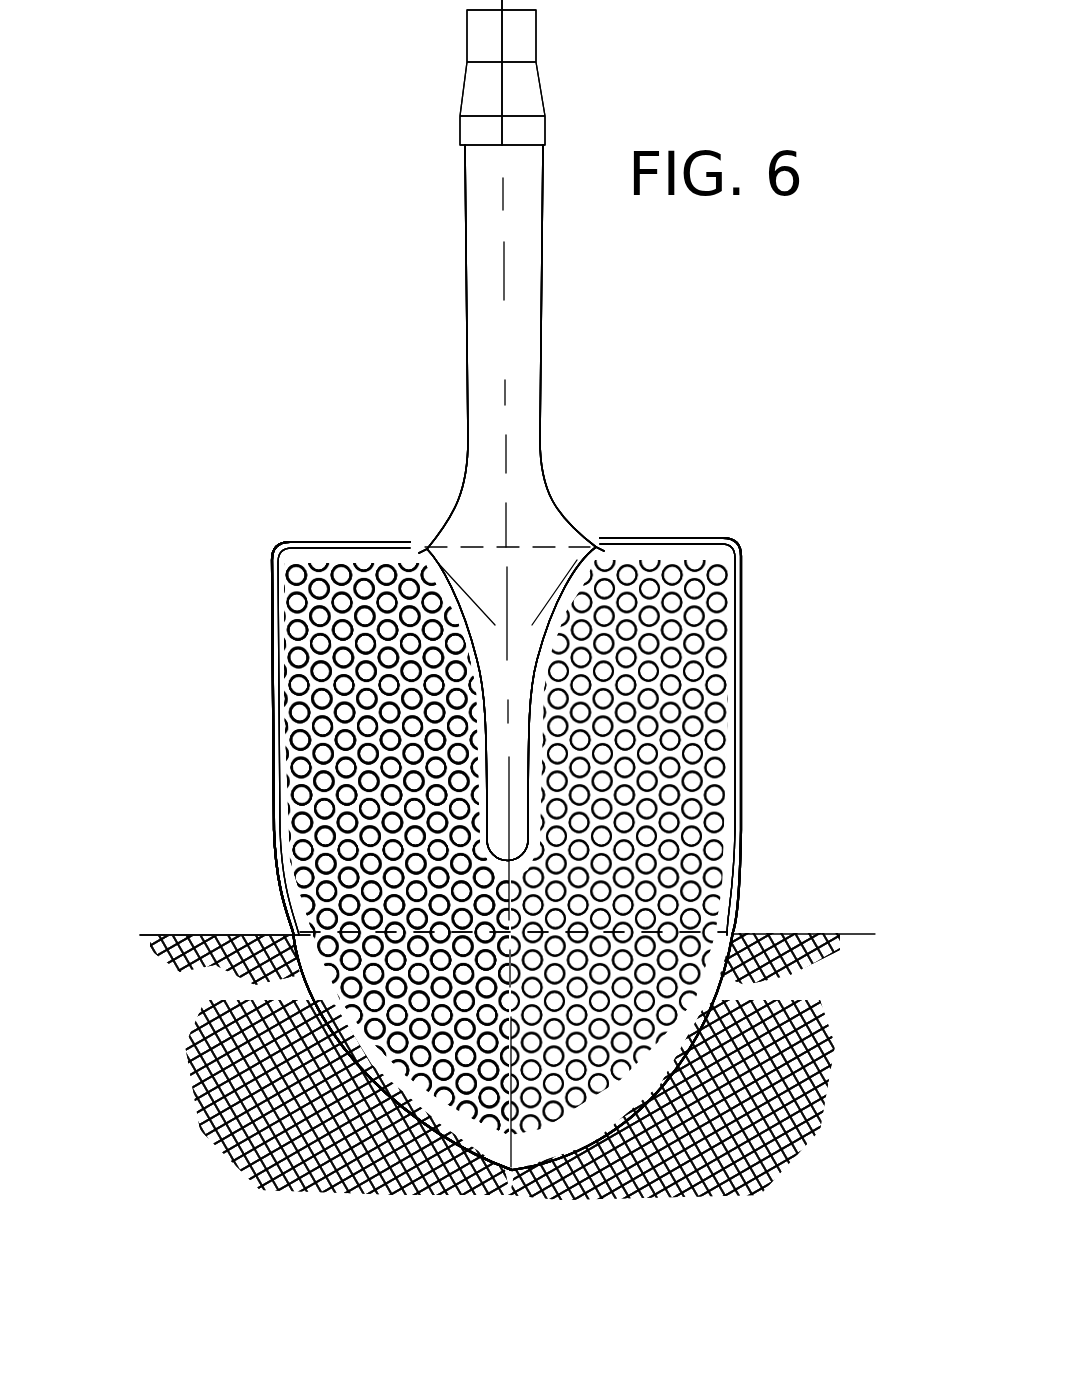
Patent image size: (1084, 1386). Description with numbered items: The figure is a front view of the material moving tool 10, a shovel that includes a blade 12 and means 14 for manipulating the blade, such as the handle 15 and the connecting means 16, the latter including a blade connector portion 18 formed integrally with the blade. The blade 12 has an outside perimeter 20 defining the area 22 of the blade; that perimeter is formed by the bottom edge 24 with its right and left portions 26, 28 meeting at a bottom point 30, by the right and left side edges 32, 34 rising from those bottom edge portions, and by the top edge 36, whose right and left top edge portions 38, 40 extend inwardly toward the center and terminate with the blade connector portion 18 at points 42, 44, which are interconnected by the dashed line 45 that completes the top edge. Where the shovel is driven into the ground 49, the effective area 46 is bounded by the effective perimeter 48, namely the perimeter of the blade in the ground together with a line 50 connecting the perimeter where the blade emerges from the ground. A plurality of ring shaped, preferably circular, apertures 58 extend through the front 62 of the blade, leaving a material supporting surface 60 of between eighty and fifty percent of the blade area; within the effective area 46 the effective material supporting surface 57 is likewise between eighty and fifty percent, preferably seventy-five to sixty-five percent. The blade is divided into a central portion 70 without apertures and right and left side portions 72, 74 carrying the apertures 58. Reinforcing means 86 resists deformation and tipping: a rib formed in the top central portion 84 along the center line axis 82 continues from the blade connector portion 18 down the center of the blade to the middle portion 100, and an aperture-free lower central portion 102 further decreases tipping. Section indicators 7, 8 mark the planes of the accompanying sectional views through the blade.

The material moving tool 10 is at (205, 418).
The blade 12 is at (272, 600).
The means for manipulating the blade 14 is at (440, 358).
The handle 15 is at (537, 40).
The connecting means 16 is at (550, 264).
The blade connector portion 18 is at (540, 335).
The outside perimeter 20 is at (275, 655).
The area of the blade 22 is at (285, 560).
The bottom edge 24 is at (345, 1112).
The right portion of the bottom edge 26 is at (668, 1127).
The left portion of the bottom edge 28 is at (385, 1135).
The blade tip 30 is at (500, 1172).
The right side edge 32 is at (740, 830).
The left side edge 34 is at (275, 824).
The top edge 36 is at (708, 537).
The right top edge portion 38 is at (710, 533).
The left top edge portion 40 is at (300, 543).
The point 42 is at (605, 543).
The point 44 is at (413, 548).
The dashed line 45 is at (507, 547).
The effective area 46 is at (297, 1032).
The effective perimeter 48 is at (312, 1007).
The ground 49 is at (140, 935).
The line 50 is at (745, 890).
The effective material supporting surface 57 is at (548, 1132).
The ring shaped apertures 58 is at (295, 742).
The material supporting surface 60 is at (298, 782).
The front of the shovel blade 62 is at (292, 700).
The central portion 70 is at (687, 537).
The right side portion 72 is at (710, 723).
The left side portion 74 is at (300, 620).
The center line axis 82 is at (503, 300).
The top central portion 84 is at (405, 548).
The reinforcing means 86 is at (523, 680).
The middle portion 100 is at (508, 862).
The lower central portion 102 is at (512, 1023).
The section line 7 is at (275, 742).
The section line 8 is at (305, 992).